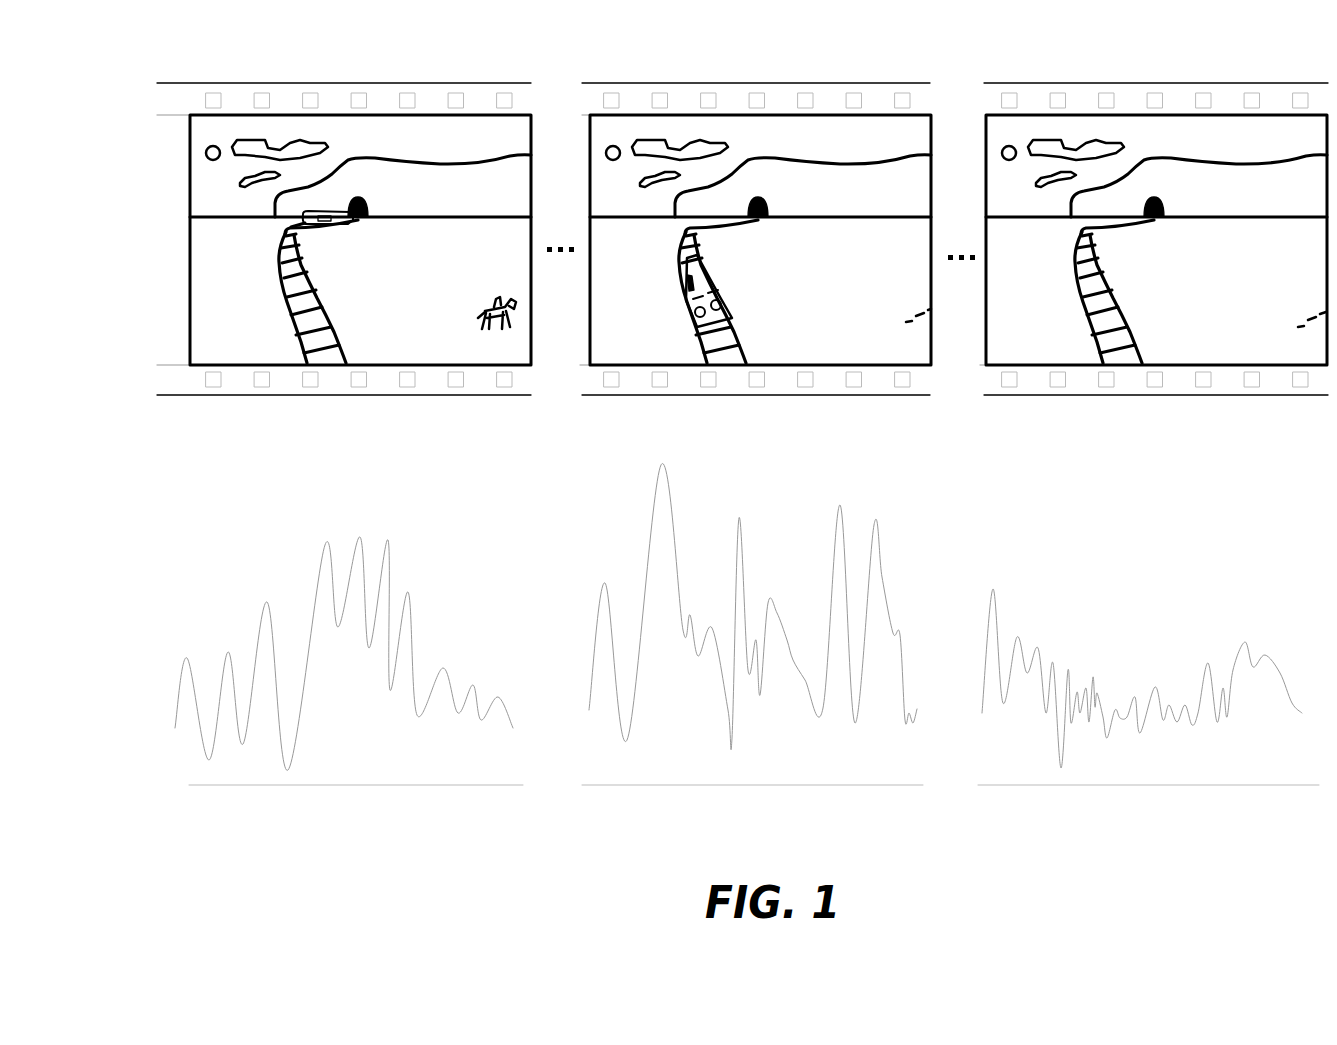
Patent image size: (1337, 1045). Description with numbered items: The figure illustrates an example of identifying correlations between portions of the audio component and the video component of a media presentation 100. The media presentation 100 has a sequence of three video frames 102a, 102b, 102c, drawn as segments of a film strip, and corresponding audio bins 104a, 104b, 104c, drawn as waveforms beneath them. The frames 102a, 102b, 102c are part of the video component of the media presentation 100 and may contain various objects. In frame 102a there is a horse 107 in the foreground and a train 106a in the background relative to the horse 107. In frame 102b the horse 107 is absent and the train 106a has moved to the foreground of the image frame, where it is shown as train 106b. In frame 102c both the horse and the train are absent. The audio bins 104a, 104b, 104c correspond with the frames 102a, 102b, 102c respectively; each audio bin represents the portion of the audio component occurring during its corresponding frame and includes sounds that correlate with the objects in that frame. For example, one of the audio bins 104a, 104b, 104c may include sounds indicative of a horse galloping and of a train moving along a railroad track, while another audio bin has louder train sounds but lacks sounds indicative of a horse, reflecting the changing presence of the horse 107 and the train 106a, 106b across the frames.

The media presentation 100 is at (205, 902).
The frame 102a is at (377, 66).
The frame 102b is at (777, 66).
The frame 102c is at (1187, 66).
The audio bin 104a is at (377, 831).
The audio bin 104b is at (773, 831).
The audio bin 104c is at (1194, 824).
The train 106a is at (335, 203).
The train 106b is at (741, 312).
The horse 107 is at (494, 336).